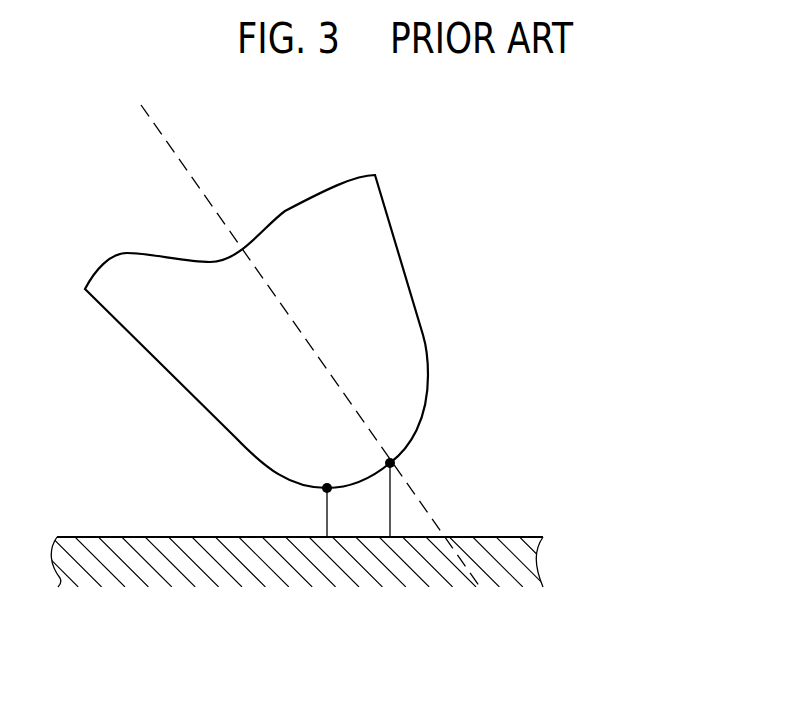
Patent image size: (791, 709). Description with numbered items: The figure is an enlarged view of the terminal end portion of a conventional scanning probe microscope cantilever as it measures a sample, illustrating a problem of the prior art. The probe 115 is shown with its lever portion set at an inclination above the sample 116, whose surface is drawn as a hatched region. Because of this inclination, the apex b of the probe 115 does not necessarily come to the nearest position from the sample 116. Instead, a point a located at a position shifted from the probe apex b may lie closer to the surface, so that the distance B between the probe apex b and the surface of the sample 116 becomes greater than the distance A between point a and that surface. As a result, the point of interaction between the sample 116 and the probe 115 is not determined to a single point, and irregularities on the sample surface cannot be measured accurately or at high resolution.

The probe 115 is at (388, 285).
The sample 116 is at (494, 548).
The point a is at (326, 474).
The probe apex b is at (390, 448).
The distance A is at (326, 515).
The distance B is at (389, 515).